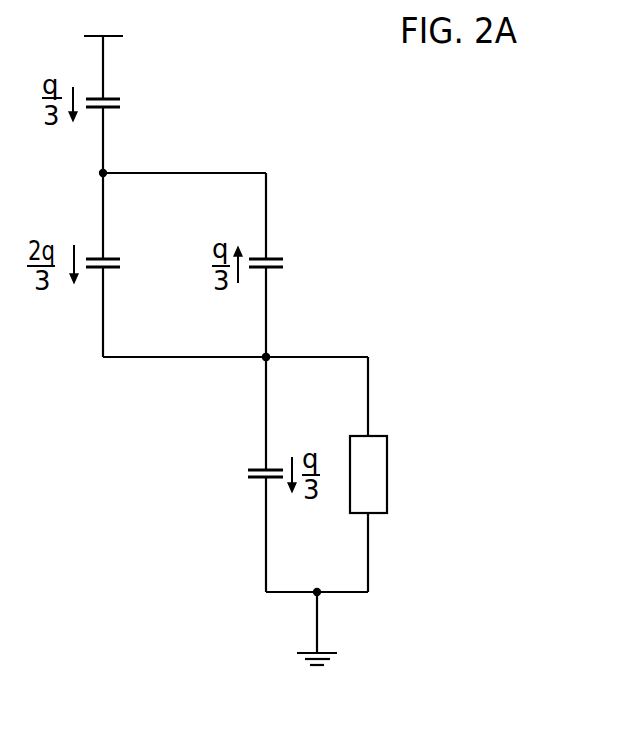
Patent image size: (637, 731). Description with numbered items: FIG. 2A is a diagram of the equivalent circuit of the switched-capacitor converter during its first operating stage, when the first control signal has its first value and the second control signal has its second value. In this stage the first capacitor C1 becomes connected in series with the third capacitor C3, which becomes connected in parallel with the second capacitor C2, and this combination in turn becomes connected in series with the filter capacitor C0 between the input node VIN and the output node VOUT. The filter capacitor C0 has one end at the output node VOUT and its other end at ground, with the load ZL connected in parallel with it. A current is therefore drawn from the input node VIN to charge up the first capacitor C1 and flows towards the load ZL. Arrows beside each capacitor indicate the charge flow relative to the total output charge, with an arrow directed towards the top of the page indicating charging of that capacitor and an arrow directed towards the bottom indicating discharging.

The first capacitor C1 is at (113, 107).
The second capacitor C2 is at (275, 258).
The third capacitor C3 is at (108, 268).
The filter capacitor C0 is at (255, 478).
The load ZL is at (387, 472).
The input node VIN is at (103, 19).
The output node VOUT is at (322, 334).